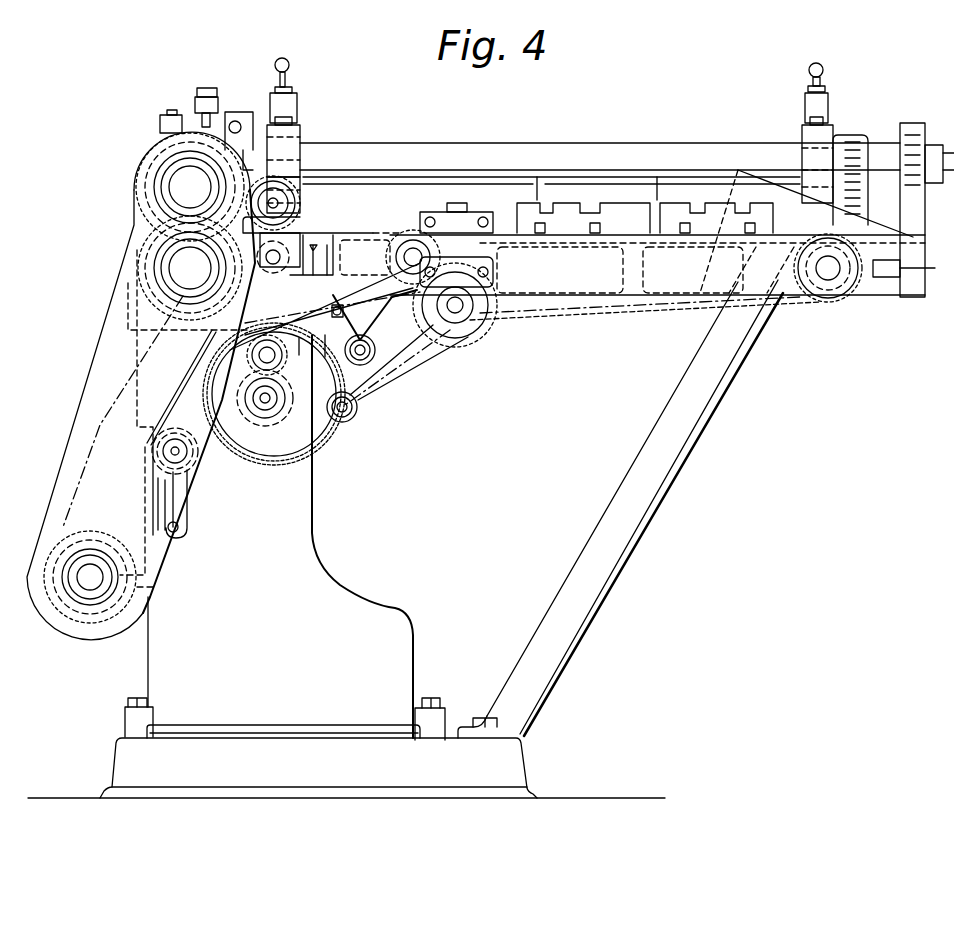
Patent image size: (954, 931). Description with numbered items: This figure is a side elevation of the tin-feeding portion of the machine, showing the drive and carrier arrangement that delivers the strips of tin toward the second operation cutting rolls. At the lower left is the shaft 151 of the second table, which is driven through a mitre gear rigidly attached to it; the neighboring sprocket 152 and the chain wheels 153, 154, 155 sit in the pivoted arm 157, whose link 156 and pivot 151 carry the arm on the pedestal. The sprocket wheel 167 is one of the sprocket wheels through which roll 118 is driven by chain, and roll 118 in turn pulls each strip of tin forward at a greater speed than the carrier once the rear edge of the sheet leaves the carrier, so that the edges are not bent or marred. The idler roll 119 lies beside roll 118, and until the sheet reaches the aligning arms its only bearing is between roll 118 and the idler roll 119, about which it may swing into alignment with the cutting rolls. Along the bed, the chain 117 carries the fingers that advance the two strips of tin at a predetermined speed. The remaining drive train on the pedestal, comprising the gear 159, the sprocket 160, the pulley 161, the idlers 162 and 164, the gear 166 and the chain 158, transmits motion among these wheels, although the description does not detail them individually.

The chain 117 is at (594, 315).
The roll 118 is at (300, 205).
The idler roll 119 is at (302, 243).
The shaft 151 is at (87, 577).
The sprocket 152 is at (90, 625).
The pulley 153 is at (157, 263).
The sprocket 154 is at (157, 240).
The sprocket 155 is at (157, 158).
The link 156 is at (200, 380).
The arm 157 is at (107, 407).
The chain 158 is at (357, 383).
The gear 159 is at (253, 422).
The sprocket 160 is at (287, 455).
The pulley 161 is at (487, 343).
The idler pulley 162 is at (430, 357).
The idler pulley 164 is at (397, 313).
The gear 166 is at (407, 253).
The sprocket wheel 167 is at (160, 177).